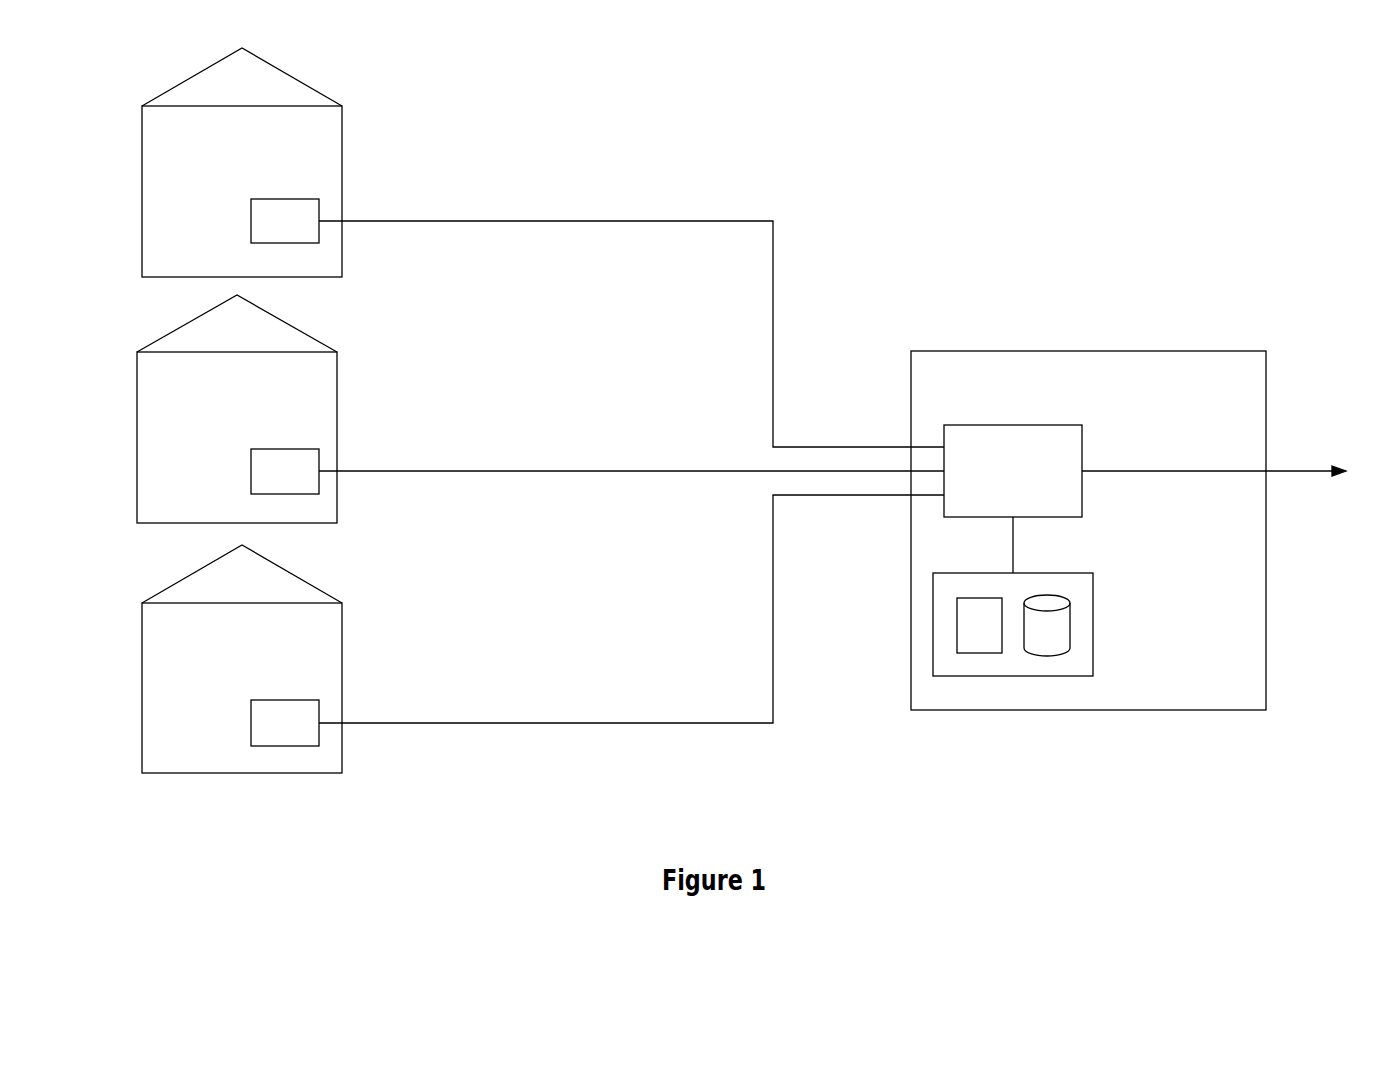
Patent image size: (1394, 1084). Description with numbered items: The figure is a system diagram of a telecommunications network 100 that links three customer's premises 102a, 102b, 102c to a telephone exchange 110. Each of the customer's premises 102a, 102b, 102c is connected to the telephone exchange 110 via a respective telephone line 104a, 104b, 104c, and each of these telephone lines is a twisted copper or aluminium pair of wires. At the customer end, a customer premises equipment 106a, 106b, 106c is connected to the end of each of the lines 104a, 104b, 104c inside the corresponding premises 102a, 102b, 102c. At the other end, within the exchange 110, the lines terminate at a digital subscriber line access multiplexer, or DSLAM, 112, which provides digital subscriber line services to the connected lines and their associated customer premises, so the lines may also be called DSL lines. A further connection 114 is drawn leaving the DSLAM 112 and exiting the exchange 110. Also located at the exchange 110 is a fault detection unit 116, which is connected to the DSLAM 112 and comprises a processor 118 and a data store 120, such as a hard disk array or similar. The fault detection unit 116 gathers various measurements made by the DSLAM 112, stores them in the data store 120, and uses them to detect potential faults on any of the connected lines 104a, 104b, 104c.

The telecommunications network 100 is at (912, 155).
The customer's premises 102a is at (167, 92).
The customer's premises 102b is at (164, 343).
The customer's premises 102c is at (166, 591).
The telephone line 104a is at (525, 210).
The telephone line 104b is at (525, 460).
The telephone line 104c is at (525, 712).
The customer premises equipment 106a is at (252, 190).
The customer premises equipment 106b is at (252, 438).
The customer premises equipment 106c is at (254, 690).
The telephone exchange 110 is at (946, 333).
The digital subscriber line access multiplexer 112 is at (1014, 417).
The network connection 114 is at (1309, 463).
The fault detection unit 116 is at (1043, 568).
The processor 118 is at (1001, 657).
The data store 120 is at (1080, 625).